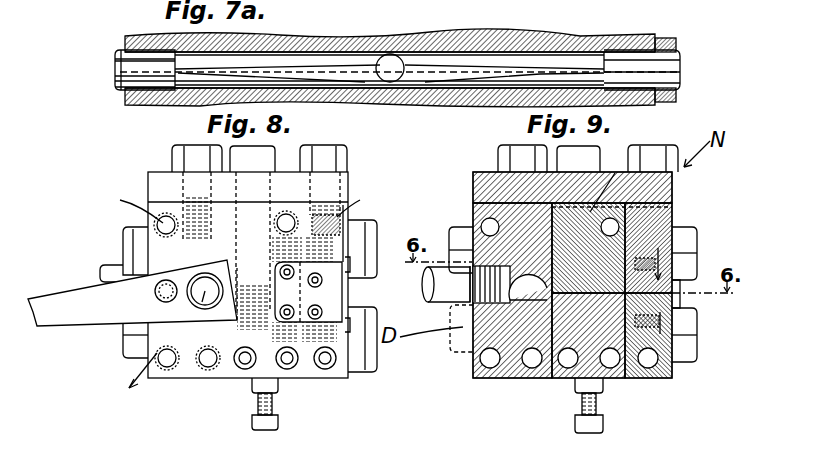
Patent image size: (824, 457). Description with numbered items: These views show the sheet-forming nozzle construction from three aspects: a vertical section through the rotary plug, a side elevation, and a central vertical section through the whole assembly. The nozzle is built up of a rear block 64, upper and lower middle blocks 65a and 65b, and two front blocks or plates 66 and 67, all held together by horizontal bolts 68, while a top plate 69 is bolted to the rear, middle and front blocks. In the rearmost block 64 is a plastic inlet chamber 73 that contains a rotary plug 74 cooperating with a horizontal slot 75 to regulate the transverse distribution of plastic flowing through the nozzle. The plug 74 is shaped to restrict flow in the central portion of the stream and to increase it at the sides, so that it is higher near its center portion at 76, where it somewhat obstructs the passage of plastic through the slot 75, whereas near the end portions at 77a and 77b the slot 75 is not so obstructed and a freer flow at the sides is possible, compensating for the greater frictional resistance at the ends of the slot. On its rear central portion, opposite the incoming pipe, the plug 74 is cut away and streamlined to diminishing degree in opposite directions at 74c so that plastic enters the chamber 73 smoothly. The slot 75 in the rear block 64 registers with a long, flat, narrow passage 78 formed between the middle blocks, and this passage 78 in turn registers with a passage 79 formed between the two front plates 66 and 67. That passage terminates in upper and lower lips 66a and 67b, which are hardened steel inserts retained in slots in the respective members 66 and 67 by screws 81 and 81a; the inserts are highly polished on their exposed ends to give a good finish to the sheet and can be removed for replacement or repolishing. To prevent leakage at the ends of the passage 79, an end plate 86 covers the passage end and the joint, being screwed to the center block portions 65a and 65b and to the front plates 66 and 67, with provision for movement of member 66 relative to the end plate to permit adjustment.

In FIG. 7A, the rear block 64 is at (423, 97).
In FIG. 8, the rear block 64 is at (163, 333).
In FIG. 9, the rear block 64 is at (502, 373).
In FIG. 9, the upper middle block 65a is at (615, 173).
In FIG. 9, the lower middle block 65b is at (577, 387).
In FIG. 9, the front block 66 is at (675, 183).
In FIG. 9, the upper lip 66a is at (697, 267).
In FIG. 9, the front block 67 is at (672, 370).
In FIG. 9, the lower lip 67b is at (673, 295).
In FIG. 8, the horizontal bolts 68 is at (362, 350).
In FIG. 9, the horizontal bolts 68 is at (463, 227).
In FIG. 8, the top plate 69 is at (155, 183).
In FIG. 9, the top plate 69 is at (483, 183).
In FIG. 9, the plastic inlet chamber 73 is at (528, 280).
In FIG. 8, the rotary plug 74 is at (203, 296).
In FIG. 9, the rotary plug 74 is at (472, 358).
In FIG. 7A, the cut-away portion of rotary plug 74c is at (368, 77).
In FIG. 9, the cut-away portion of rotary plug 74c is at (428, 298).
In FIG. 7A, the horizontal slot 75 is at (187, 70).
In FIG. 9, the horizontal slot 75 is at (545, 300).
In FIG. 7A, the center portion of rotary plug 76 is at (390, 68).
In FIG. 7A, the end portion of rotary plug 77a is at (200, 93).
In FIG. 7A, the end portion of rotary plug 77b is at (540, 68).
In FIG. 9, the flat narrow passage 78 is at (612, 360).
In FIG. 9, the passage 79 is at (650, 362).
In FIG. 9, the screw 81 is at (687, 247).
In FIG. 9, the screw 81a is at (688, 322).
In FIG. 8, the end plate 86 is at (308, 350).